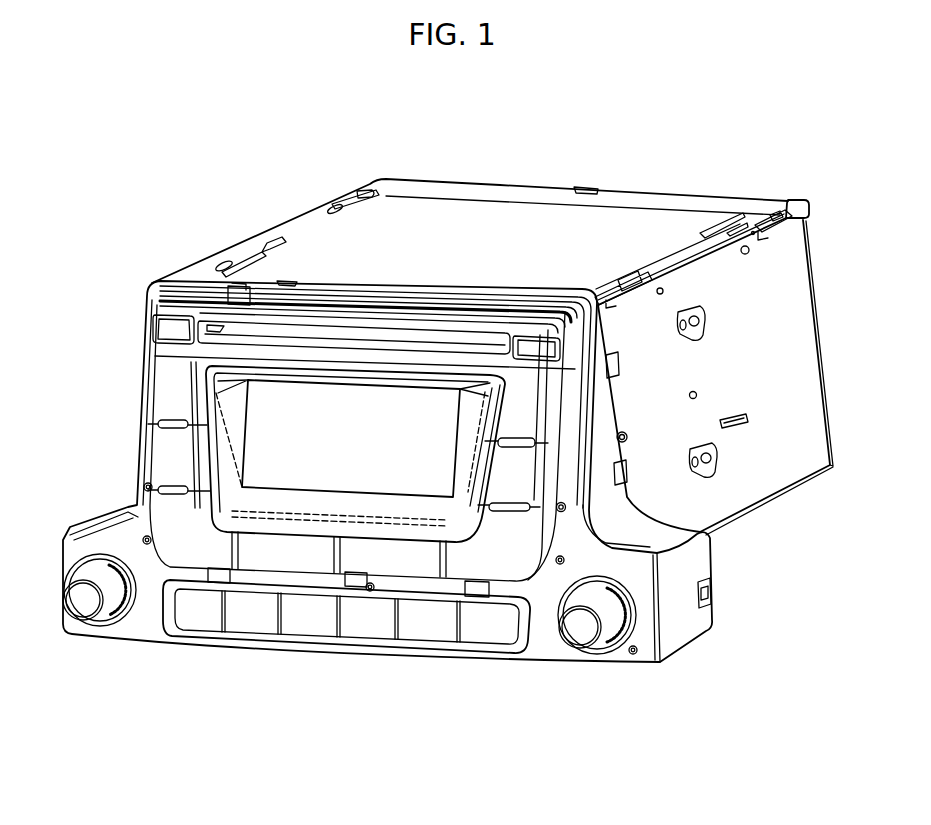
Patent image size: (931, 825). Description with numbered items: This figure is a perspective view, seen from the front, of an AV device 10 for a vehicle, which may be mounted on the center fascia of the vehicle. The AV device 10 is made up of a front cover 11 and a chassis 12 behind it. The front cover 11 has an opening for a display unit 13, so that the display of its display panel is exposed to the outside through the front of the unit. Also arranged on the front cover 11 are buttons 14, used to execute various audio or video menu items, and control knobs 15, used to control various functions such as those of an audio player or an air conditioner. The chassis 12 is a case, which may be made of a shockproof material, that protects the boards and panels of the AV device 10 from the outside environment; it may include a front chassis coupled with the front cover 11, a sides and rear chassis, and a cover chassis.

The AV device 10 is at (430, 113).
The front cover 11 is at (683, 562).
The chassis 12 is at (788, 300).
The display unit 13 is at (377, 390).
The buttons 14 is at (477, 552).
The control knobs 15 is at (578, 628).